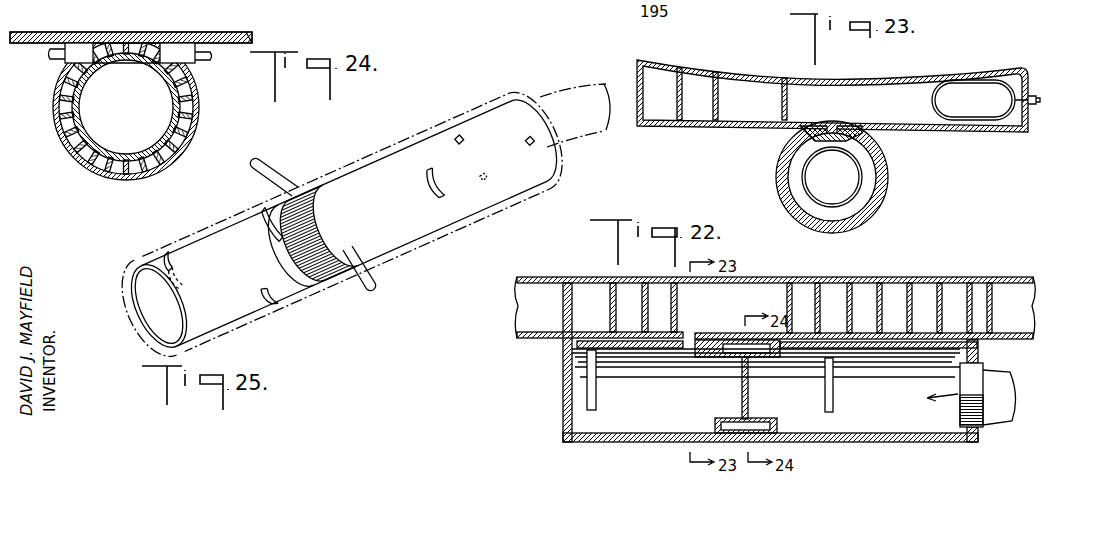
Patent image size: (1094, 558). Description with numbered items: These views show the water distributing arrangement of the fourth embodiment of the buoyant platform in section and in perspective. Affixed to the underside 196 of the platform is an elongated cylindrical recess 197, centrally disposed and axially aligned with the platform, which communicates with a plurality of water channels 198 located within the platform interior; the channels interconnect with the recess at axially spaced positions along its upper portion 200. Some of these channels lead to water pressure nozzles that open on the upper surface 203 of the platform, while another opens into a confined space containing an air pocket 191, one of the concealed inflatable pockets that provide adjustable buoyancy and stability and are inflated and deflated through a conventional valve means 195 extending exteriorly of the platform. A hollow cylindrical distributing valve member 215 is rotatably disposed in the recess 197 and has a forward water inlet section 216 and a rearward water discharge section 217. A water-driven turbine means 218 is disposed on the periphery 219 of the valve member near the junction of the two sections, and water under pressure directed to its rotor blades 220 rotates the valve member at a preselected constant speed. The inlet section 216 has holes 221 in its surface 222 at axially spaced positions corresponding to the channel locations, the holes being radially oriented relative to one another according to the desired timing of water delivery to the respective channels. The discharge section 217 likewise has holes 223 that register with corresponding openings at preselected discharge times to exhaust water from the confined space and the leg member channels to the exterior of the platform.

In FIG. 23, the air pocket 191 is at (977, 85).
In FIG. 23, the valve means 195 is at (1038, 98).
In FIG. 24, the underside 196 is at (55, 34).
In FIG. 23, the underside 196 is at (912, 128).
In FIG. 24, the cylindrical recess 197 is at (193, 143).
In FIG. 25, the cylindrical recess 197 is at (452, 215).
In FIG. 23, the cylindrical recess 197 is at (885, 206).
In FIG. 22, the cylindrical recess 197 is at (985, 354).
In FIG. 22, the water channels 198 is at (623, 288).
In FIG. 23, the upper portion 200 is at (840, 123).
In FIG. 23, the upper surface 203 is at (922, 80).
In FIG. 22, the upper surface 203 is at (848, 282).
In FIG. 23, the distributing valve member 215 is at (892, 179).
In FIG. 22, the distributing valve member 215 is at (662, 438).
In FIG. 25, the water inlet section 216 is at (485, 125).
In FIG. 22, the water inlet section 216 is at (918, 430).
In FIG. 25, the water discharge section 217 is at (203, 263).
In FIG. 22, the water discharge section 217 is at (610, 388).
In FIG. 25, the water-driven turbine means 218 is at (311, 184).
In FIG. 25, the periphery 219 is at (283, 206).
In FIG. 24, the rotor blades 220 is at (188, 107).
In FIG. 25, the rotor blades 220 is at (330, 262).
In FIG. 25, the holes 221 is at (512, 151).
In FIG. 22, the holes 221 is at (887, 433).
In FIG. 25, the surface 222 is at (429, 148).
In FIG. 25, the holes 223 is at (172, 252).
In FIG. 22, the holes 223 is at (683, 353).